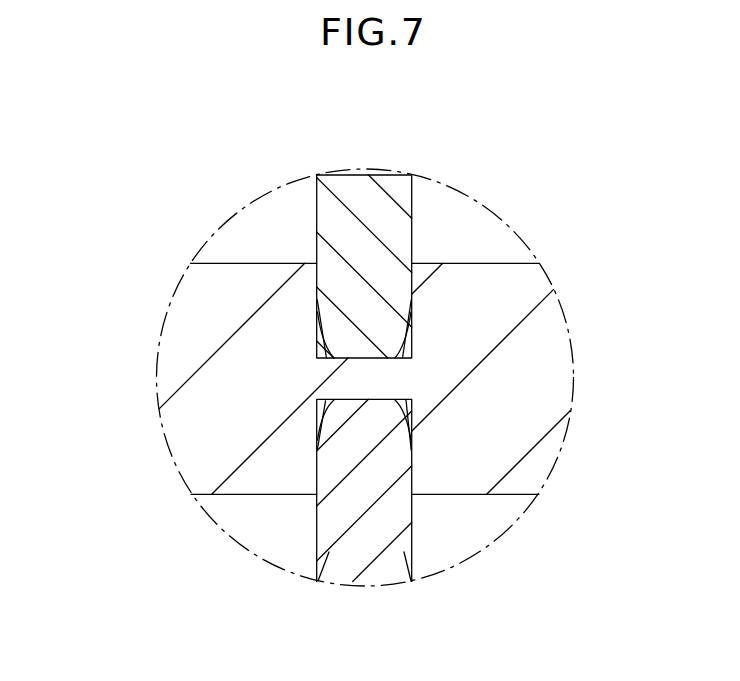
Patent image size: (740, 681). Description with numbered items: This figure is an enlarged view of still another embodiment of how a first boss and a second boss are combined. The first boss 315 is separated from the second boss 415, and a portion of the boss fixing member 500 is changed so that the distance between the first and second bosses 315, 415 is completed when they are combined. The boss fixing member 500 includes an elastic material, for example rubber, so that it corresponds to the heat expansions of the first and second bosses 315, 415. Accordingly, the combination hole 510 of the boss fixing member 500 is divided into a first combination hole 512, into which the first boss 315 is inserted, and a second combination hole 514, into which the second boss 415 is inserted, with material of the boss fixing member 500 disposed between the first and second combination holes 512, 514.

The boss fixing member 500 is at (486, 252).
The first boss 315 is at (358, 192).
The second boss 415 is at (358, 565).
The combination hole 510 is at (82, 343).
The first combination hole 512 is at (322, 362).
The second combination hole 514 is at (324, 398).